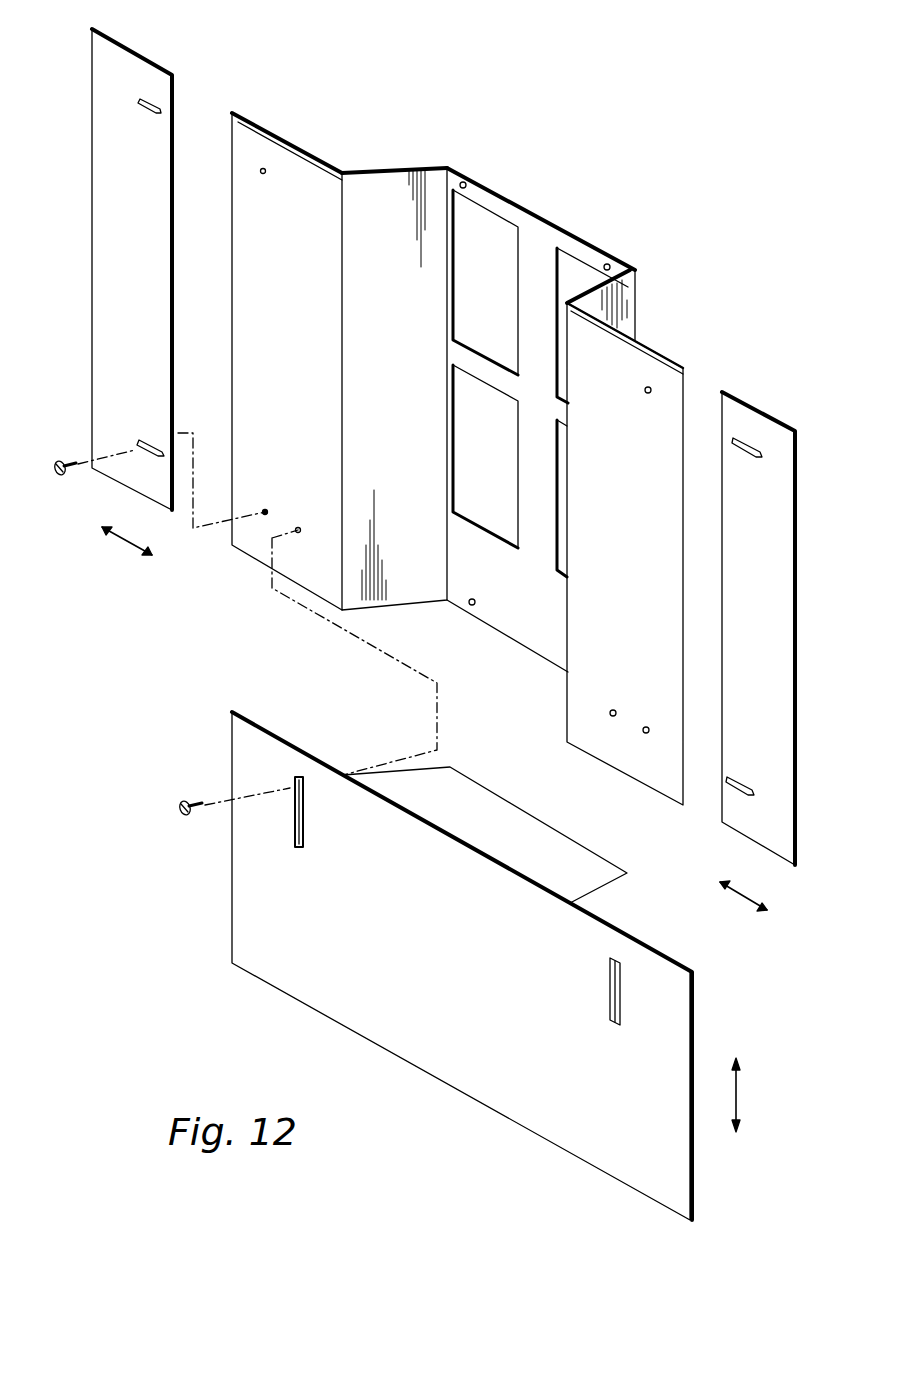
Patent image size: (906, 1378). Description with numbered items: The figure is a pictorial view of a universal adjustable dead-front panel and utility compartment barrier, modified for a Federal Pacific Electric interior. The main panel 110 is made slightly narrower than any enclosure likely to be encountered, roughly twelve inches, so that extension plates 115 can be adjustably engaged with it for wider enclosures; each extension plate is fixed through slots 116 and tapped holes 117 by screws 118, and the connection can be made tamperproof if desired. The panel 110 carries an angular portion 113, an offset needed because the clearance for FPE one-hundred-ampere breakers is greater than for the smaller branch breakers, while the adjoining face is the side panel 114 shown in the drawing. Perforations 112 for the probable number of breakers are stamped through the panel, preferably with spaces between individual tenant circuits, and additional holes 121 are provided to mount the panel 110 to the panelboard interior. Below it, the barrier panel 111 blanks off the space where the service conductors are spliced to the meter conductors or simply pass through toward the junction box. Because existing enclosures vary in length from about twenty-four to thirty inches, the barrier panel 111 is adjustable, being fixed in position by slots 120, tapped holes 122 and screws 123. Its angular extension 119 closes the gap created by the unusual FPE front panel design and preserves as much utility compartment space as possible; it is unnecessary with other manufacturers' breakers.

The panel 110 is at (457, 443).
The panel 111 is at (427, 966).
The perforations 112 is at (565, 467).
The angular portion 113 is at (366, 168).
The side panel 114 is at (287, 350).
The extension plates 115 is at (162, 264).
The slots 116 is at (150, 100).
The tapped holes 117 is at (262, 174).
The screws 118 is at (55, 462).
The angular extension 119 is at (515, 820).
The slots 120 is at (293, 828).
The holes 121 is at (465, 175).
The tapped holes 122 is at (298, 528).
The screws 123 is at (182, 802).